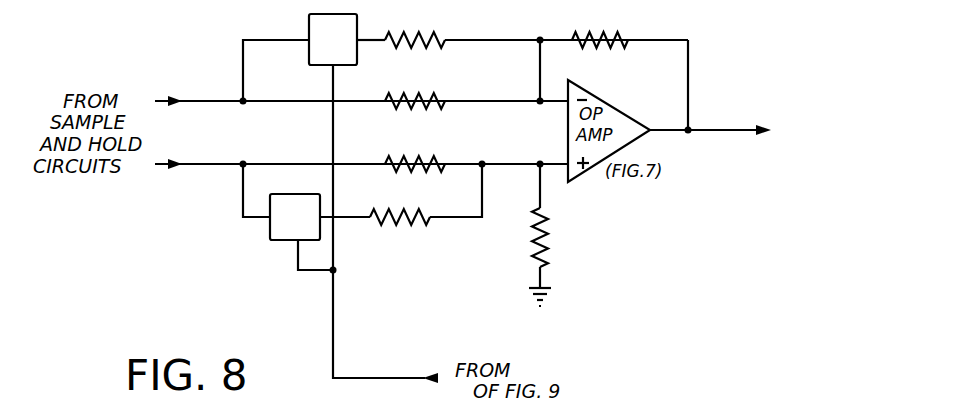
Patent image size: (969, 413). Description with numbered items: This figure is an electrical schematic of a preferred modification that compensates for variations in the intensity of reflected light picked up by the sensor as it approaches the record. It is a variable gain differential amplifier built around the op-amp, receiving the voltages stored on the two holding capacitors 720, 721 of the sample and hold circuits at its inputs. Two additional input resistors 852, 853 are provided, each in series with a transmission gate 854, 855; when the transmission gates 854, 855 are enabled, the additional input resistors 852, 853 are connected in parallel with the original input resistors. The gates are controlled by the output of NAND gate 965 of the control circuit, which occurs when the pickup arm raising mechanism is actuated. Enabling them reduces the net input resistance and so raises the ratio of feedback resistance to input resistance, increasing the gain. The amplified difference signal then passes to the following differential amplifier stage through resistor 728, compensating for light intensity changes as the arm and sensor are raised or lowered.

The holding capacitor 720 is at (195, 81).
The holding capacitor 721 is at (180, 167).
The transmission gate 854 is at (358, 19).
The additional input resistor 852 is at (431, 38).
The transmission gate 855 is at (278, 243).
The additional input resistor 853 is at (417, 226).
The resistor 728 is at (747, 130).
The NAND gate 965 is at (674, 369).